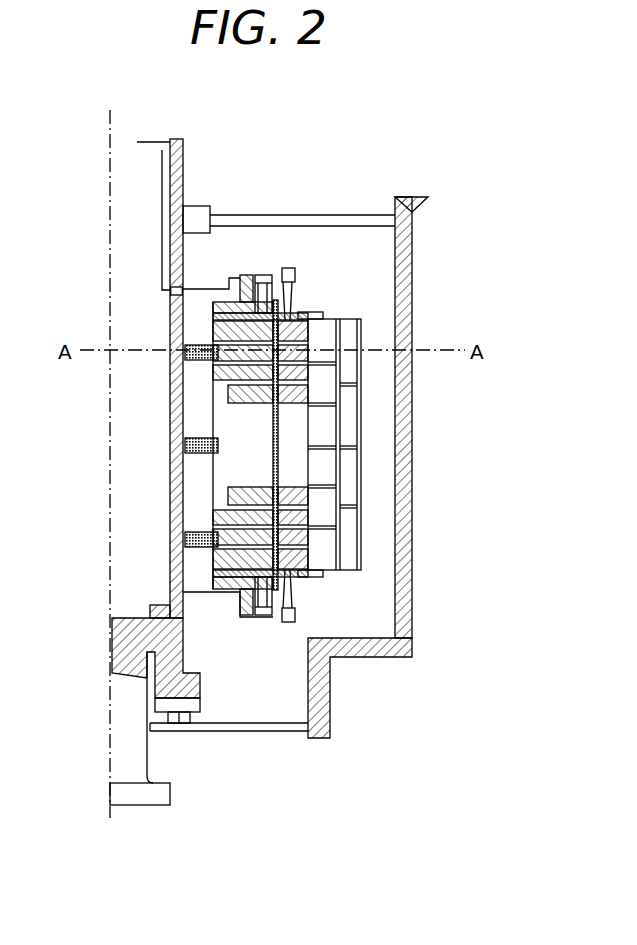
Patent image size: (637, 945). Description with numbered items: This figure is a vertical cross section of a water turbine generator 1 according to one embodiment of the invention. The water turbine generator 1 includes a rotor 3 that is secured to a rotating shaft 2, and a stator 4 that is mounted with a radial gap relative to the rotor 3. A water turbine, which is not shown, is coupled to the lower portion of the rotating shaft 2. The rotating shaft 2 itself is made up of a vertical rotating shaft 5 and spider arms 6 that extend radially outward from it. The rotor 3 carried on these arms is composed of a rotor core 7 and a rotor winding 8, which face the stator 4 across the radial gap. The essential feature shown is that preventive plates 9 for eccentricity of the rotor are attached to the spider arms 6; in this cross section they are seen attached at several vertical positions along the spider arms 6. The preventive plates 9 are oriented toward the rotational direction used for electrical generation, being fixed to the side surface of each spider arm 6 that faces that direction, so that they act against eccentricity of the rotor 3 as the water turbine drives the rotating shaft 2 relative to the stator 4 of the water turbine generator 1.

The water turbine generator 1 is at (326, 136).
The rotating shaft 2 is at (70, 470).
The rotor 3 is at (468, 220).
The stator 4 is at (293, 478).
The vertical rotating shaft 5 is at (175, 512).
The spider arms 6 is at (200, 472).
The rotor core 7 is at (268, 375).
The rotor winding 8 is at (267, 292).
The preventive plates for eccentricity of rotor 9 is at (202, 438).